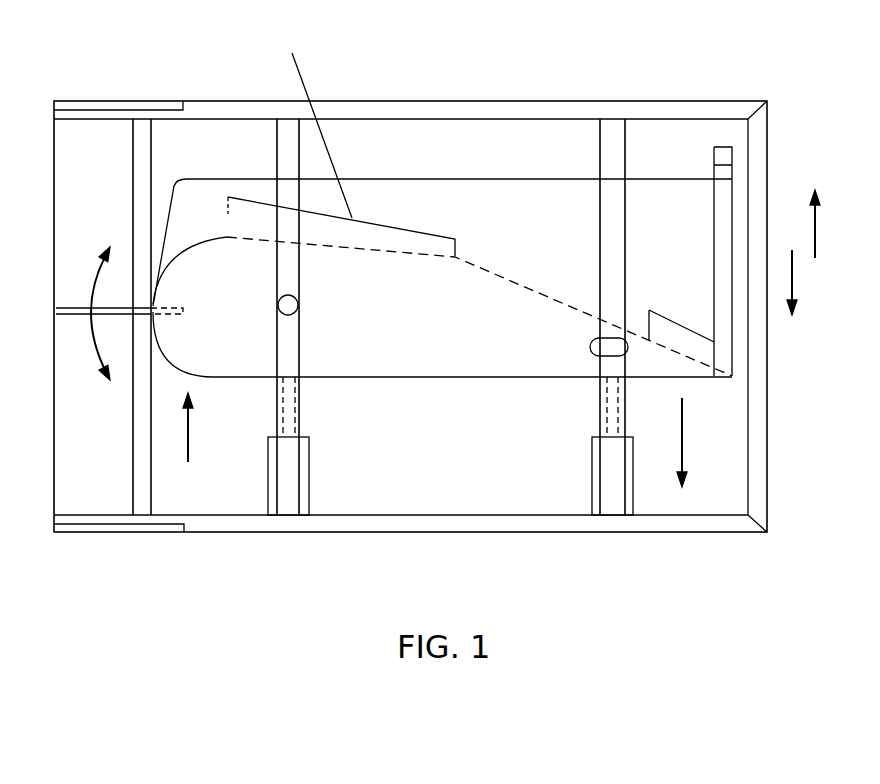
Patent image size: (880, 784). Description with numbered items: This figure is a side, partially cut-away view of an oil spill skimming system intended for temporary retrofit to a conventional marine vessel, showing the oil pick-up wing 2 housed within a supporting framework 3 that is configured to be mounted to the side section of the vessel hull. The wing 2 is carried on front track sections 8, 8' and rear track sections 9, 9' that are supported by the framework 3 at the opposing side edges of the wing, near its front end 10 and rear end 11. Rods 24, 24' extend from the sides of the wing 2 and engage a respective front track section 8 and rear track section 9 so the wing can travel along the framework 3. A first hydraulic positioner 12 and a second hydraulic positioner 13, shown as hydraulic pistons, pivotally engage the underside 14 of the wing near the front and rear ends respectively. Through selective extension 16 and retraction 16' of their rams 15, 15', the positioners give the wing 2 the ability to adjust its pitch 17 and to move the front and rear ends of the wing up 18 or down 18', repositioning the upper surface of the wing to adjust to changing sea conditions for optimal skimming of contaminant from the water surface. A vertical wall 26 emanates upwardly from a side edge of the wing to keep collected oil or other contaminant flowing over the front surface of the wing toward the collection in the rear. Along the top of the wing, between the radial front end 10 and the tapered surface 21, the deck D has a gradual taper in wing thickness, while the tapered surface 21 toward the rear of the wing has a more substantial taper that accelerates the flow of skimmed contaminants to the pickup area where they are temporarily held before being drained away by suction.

The oil pick-up wing 2 is at (444, 343).
The supporting framework 3 is at (465, 107).
The front track section 8 is at (270, 317).
The front track section 8' is at (233, 147).
The rear track section 9 is at (639, 317).
The rear track section 9' is at (573, 145).
The front end 10 is at (167, 352).
The rear end 11 is at (700, 378).
The first hydraulic positioner 12 is at (310, 445).
The second hydraulic positioner 13 is at (633, 463).
The underside 14 is at (365, 378).
The ram 15 is at (328, 418).
The ram 15' is at (582, 430).
The extension 16 is at (214, 441).
The retraction 16' is at (708, 442).
The pitch 17 is at (93, 273).
The up movement 18 is at (798, 205).
The down movement 18' is at (819, 304).
The tapered surface 21 is at (550, 297).
The rod 24 is at (321, 297).
The rod 24' is at (576, 383).
The first vertical wall 26 is at (466, 231).
The deck D is at (316, 124).